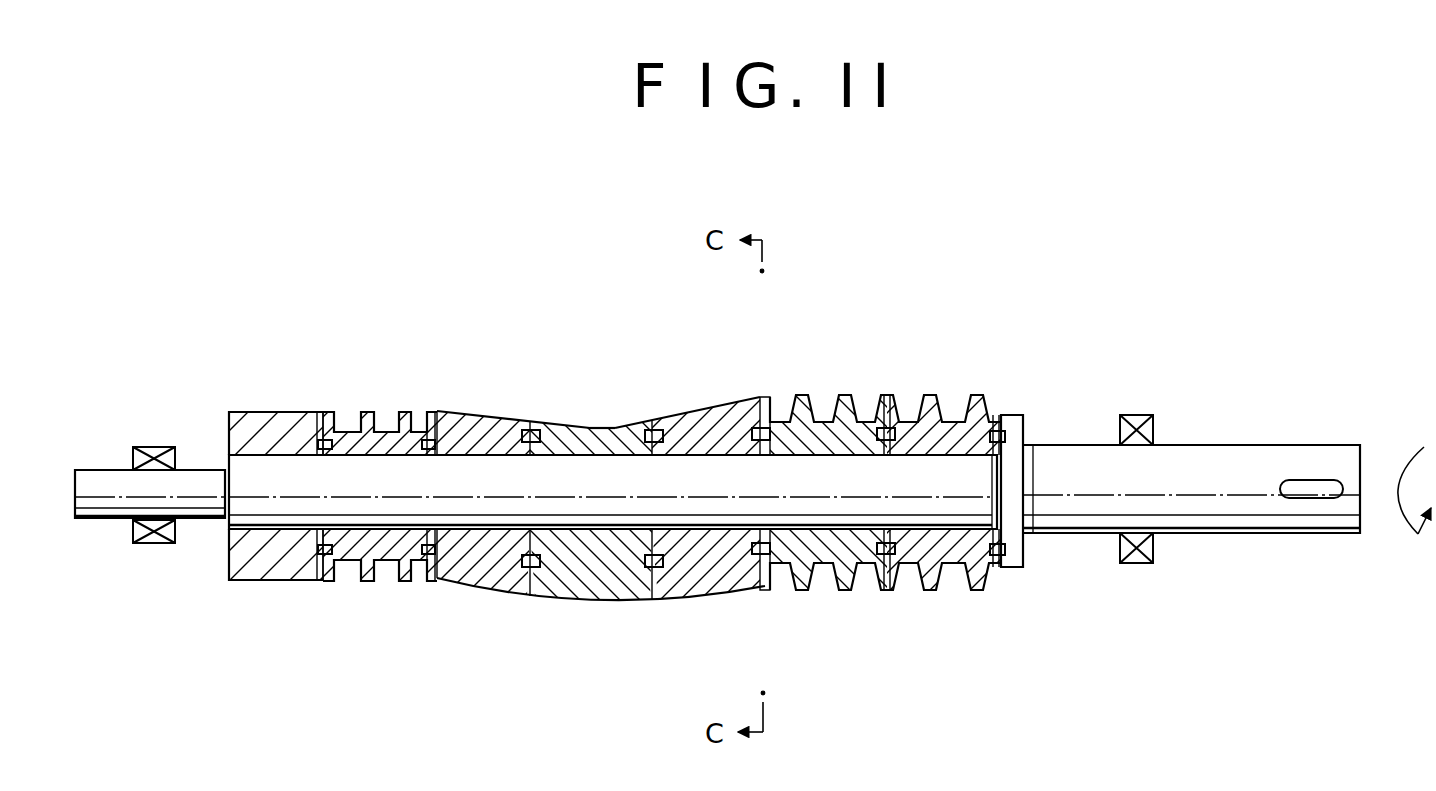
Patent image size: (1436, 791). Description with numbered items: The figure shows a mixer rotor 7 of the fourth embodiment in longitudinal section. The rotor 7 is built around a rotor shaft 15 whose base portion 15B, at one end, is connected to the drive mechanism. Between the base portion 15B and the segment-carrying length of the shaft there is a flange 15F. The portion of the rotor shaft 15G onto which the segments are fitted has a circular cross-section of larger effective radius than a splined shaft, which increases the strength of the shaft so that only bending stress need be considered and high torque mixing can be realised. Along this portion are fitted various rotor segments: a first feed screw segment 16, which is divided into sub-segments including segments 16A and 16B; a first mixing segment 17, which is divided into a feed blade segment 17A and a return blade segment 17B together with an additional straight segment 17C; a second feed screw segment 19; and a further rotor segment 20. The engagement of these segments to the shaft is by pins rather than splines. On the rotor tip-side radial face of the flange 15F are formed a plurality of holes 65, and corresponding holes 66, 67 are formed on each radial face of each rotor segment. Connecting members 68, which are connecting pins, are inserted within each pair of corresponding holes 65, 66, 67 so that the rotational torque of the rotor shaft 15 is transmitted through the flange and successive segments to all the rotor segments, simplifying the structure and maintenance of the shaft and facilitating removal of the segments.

The rotor 7 is at (472, 404).
The rotor shaft 15 is at (1168, 462).
The base portion 15B is at (1255, 450).
The flange 15F is at (1022, 424).
The rotor shaft (circular cross-section portion) 15G is at (600, 500).
The first feed screw segment 16 is at (990, 290).
The first rotor segment 16A is at (936, 395).
The first feed screw sub-segment 16B is at (845, 395).
The first mixing segment 17 is at (715, 300).
The feed blade segment 17A is at (705, 412).
The return blade segment 17B is at (585, 428).
The straight segment 17C is at (493, 422).
The second feed screw segment 19 is at (370, 413).
The rotor segment 20 is at (255, 413).
The holes 65 is at (1020, 562).
The holes 66 is at (320, 556).
The holes 67 is at (333, 582).
The connecting members 68 is at (320, 413).